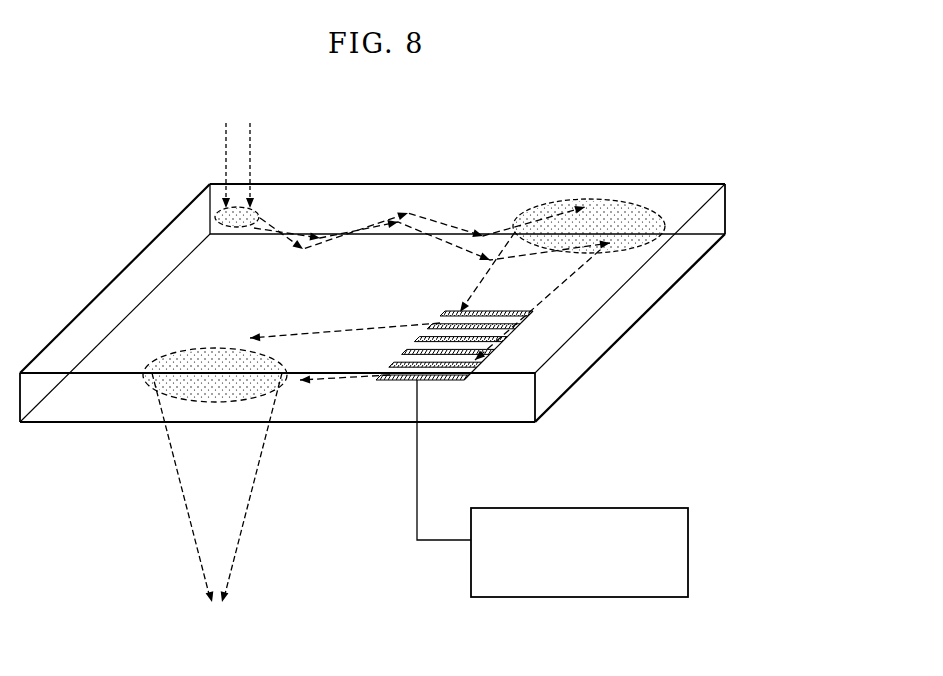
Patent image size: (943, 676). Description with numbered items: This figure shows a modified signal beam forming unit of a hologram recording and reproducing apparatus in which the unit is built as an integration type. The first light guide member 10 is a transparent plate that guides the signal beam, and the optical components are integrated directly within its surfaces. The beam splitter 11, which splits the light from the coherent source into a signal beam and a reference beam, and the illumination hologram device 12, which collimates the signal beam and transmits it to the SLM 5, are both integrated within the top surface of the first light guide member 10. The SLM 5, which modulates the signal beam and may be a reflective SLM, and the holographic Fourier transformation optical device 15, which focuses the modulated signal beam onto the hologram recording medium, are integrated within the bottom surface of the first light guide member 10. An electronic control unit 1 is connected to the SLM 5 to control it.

The electronic control unit 1 is at (622, 508).
The SLM 5 is at (396, 380).
The first light guide member 10 is at (612, 340).
The beam splitter 11 is at (258, 211).
The illumination hologram device 12 is at (612, 208).
The holographic Fourier transformation optical device 15 is at (213, 352).